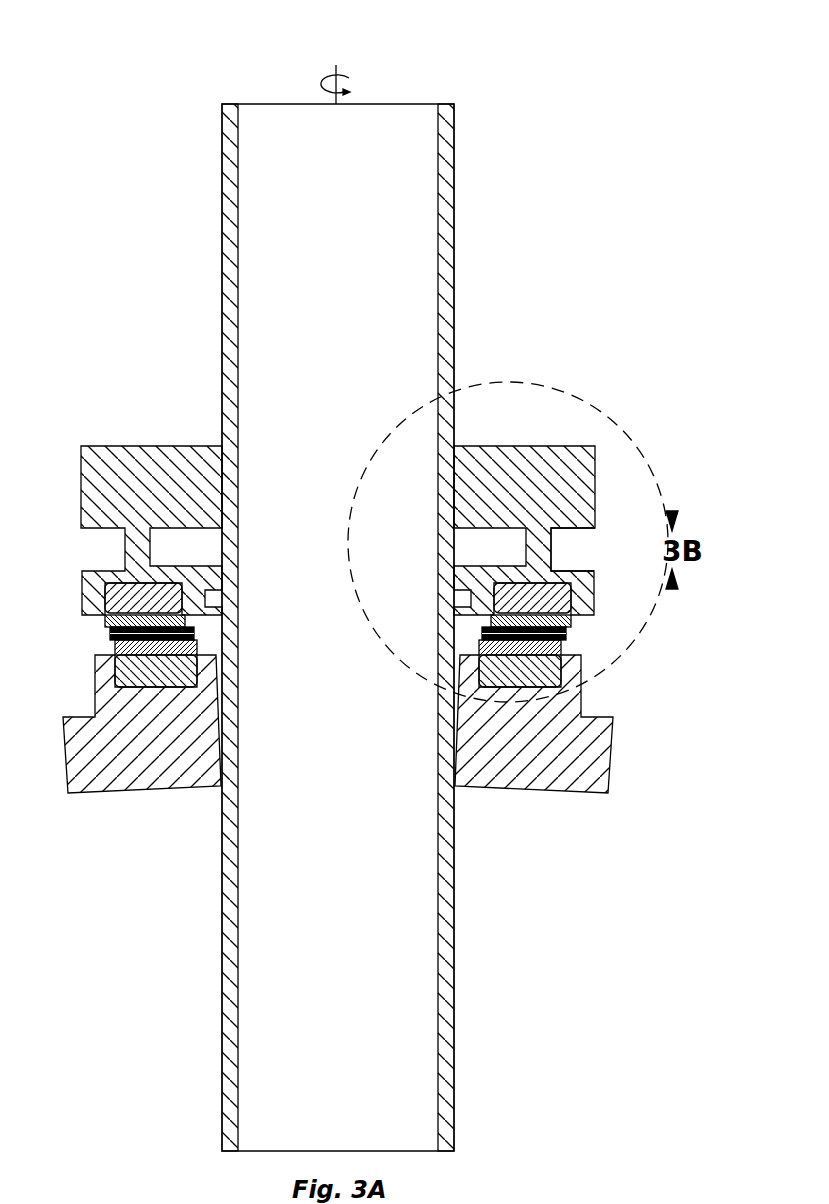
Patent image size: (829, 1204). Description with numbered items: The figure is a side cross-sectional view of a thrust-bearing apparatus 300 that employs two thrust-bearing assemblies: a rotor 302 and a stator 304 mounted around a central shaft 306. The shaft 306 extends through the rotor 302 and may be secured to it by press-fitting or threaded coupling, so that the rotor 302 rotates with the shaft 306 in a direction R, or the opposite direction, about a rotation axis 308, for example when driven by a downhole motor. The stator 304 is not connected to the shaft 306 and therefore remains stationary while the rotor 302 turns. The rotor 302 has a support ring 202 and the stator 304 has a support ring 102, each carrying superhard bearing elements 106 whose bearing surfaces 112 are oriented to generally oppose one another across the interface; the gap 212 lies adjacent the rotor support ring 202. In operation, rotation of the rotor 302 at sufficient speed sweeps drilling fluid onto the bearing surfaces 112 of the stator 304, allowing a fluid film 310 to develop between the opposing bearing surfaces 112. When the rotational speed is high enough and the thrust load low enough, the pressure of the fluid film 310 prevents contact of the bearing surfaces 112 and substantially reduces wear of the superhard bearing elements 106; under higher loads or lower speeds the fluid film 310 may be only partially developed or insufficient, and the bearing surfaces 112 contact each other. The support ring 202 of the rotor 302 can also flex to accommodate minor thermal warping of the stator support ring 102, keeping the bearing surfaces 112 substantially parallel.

The support ring 102 is at (611, 763).
The superhard bearing elements 106 is at (569, 600).
The bearing surfaces 112 is at (566, 620).
The support ring 202 is at (598, 463).
The gap 212 is at (566, 547).
The thrust-bearing apparatus 300 is at (632, 408).
The rotor 302 is at (612, 506).
The stator 304 is at (690, 687).
The shaft 306 is at (449, 169).
The rotation axis 308 is at (339, 78).
The fluid film 310 is at (566, 633).